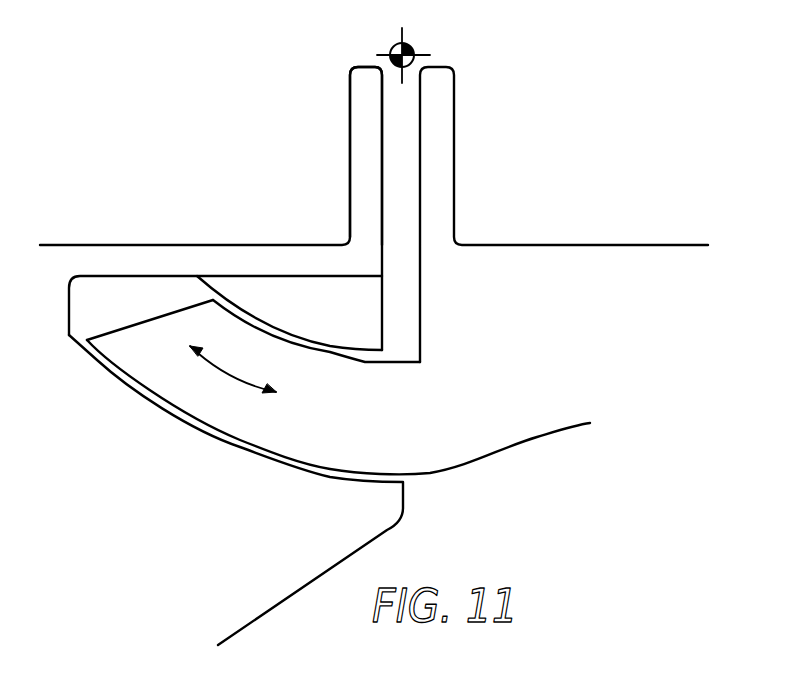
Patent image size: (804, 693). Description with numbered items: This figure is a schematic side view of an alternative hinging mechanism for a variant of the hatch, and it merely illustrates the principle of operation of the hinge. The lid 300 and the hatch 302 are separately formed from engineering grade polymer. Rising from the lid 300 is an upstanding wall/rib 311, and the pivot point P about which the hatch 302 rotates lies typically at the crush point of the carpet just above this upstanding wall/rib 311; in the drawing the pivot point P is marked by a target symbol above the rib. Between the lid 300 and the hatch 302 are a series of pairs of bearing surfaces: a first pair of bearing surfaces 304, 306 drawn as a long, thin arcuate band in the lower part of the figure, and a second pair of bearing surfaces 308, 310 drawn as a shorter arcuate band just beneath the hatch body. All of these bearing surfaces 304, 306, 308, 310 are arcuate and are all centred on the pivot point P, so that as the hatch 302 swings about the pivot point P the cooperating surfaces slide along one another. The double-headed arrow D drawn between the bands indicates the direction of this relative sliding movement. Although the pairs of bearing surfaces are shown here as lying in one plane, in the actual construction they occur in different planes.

The lid 300 is at (533, 258).
The hatch 302 is at (127, 257).
The bearing surface 304 is at (230, 450).
The bearing surface 306 is at (262, 448).
The bearing surface 308 is at (320, 365).
The bearing surface 310 is at (289, 333).
The upstanding wall/rib 311 is at (365, 97).
The direction of travel D is at (233, 362).
The pivot point P is at (412, 45).